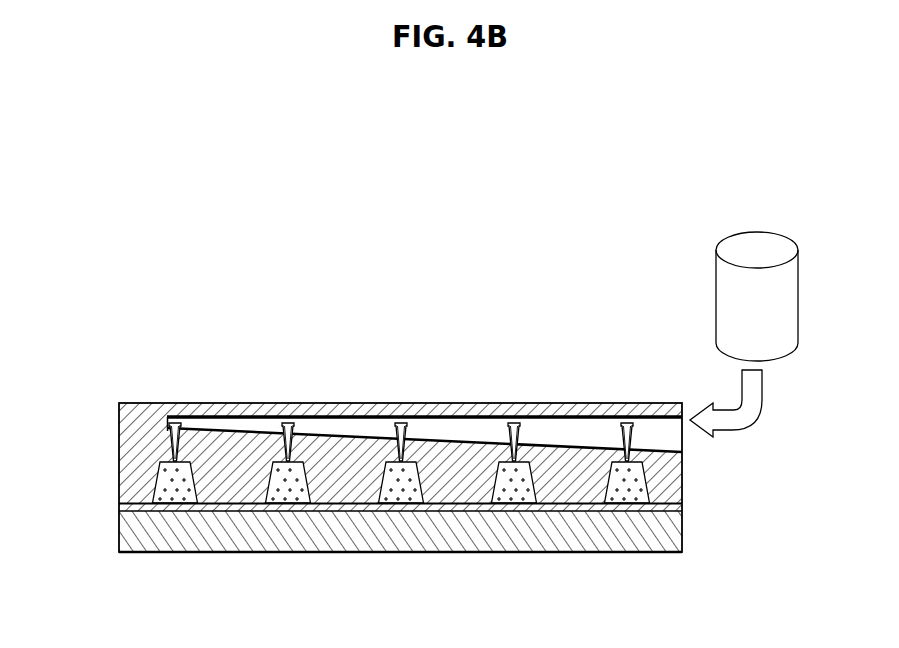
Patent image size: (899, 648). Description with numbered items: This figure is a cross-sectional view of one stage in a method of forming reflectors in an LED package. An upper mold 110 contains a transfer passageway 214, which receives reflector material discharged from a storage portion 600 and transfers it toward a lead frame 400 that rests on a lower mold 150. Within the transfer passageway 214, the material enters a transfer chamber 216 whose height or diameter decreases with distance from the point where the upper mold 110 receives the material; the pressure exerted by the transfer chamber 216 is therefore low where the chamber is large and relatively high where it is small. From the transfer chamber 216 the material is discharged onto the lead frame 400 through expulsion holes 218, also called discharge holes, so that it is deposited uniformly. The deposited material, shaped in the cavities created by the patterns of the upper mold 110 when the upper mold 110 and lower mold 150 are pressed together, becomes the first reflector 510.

The upper mold 110 is at (411, 441).
The transfer passageway 214 is at (424, 368).
The transfer chamber 216 is at (358, 325).
The expulsion holes 218 is at (305, 419).
The lead frame 400 is at (678, 502).
The lower mold 150 is at (665, 530).
The first reflector 510 is at (627, 483).
The storage portion 600 is at (757, 232).